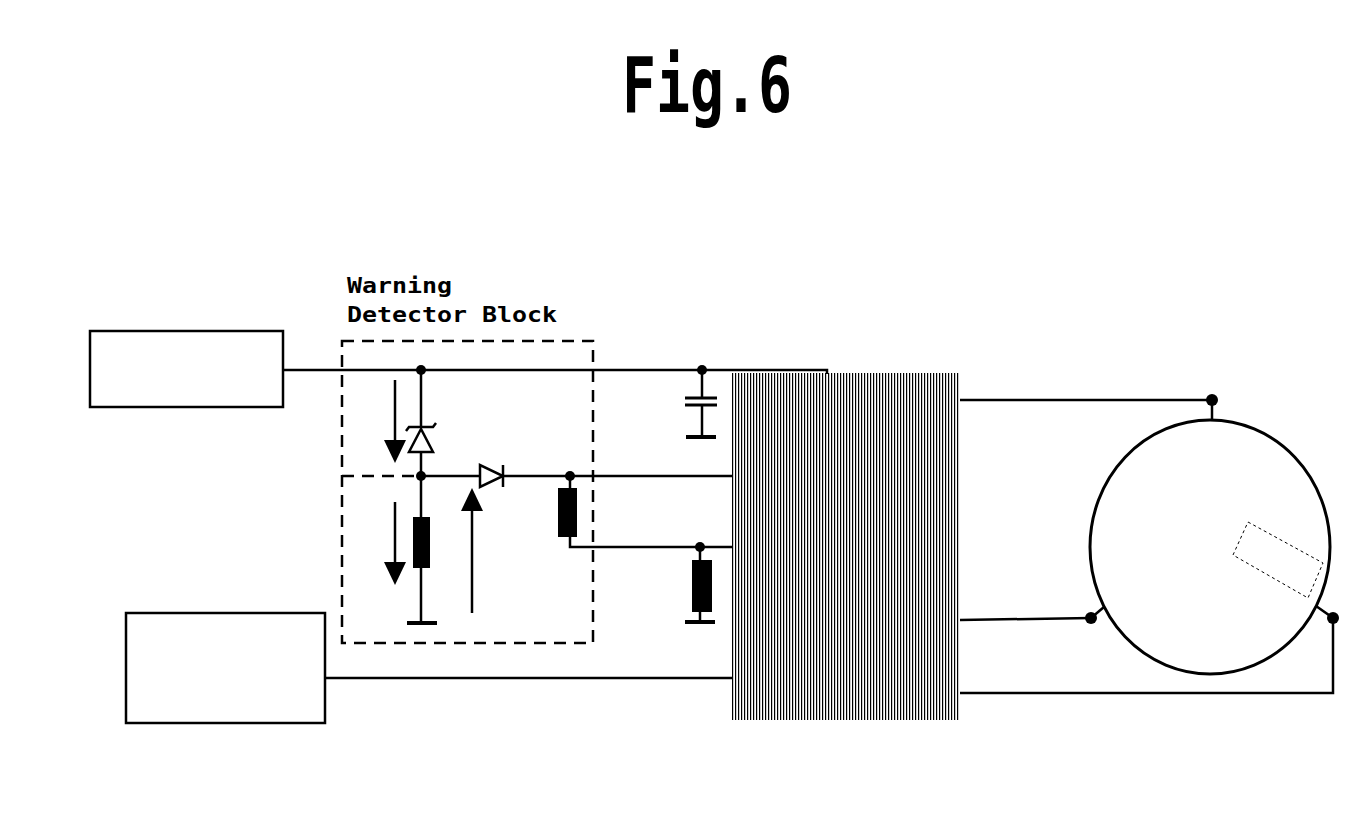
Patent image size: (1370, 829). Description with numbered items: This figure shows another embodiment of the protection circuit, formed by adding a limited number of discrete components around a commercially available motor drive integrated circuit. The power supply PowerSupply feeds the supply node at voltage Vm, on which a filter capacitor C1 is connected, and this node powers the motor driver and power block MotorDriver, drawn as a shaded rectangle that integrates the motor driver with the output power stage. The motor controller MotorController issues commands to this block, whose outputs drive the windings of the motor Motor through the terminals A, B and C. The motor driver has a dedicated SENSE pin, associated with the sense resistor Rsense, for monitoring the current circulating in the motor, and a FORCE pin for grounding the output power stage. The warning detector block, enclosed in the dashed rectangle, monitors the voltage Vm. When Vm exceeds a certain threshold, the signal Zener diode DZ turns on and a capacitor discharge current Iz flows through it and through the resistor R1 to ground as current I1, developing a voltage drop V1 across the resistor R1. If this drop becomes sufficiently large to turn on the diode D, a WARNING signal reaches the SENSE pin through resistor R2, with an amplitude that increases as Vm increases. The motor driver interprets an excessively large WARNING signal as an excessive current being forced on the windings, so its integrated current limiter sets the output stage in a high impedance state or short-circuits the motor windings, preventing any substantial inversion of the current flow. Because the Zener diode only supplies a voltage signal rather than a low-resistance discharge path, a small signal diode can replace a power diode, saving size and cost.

The supply node voltage Vm is at (555, 354).
The Zener diode DZ is at (429, 423).
The capacitor discharge current Iz is at (381, 421).
The resistor R1 is at (432, 549).
The current through resistor R1 I1 is at (381, 543).
The voltage drop on resistor R1 V1 is at (482, 550).
The diode D is at (576, 465).
The resistor R2 is at (629, 511).
The sense resistor Rsense is at (657, 584).
The filter capacitor C1 is at (701, 403).
The power supply PowerSupply is at (186, 369).
The motor controller MotorController is at (225, 668).
The motor driver and power block MotorDriver is at (831, 565).
The motor Motor is at (1210, 547).
The motor winding terminal A is at (1097, 405).
The motor winding terminal B is at (1035, 630).
The motor winding terminal C is at (1149, 649).